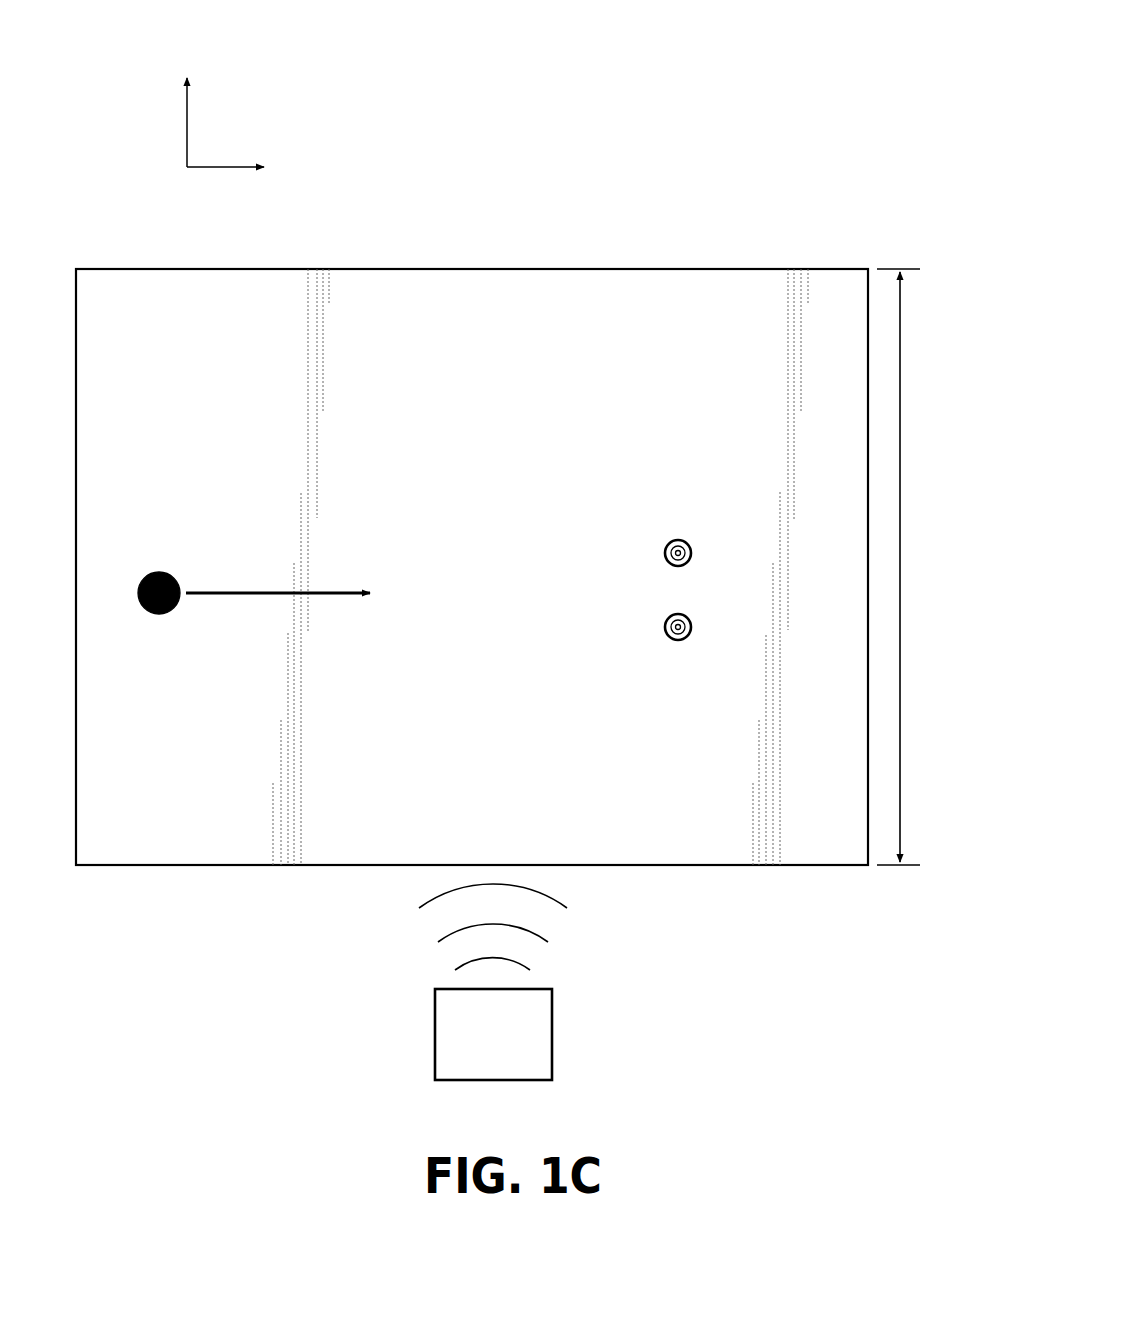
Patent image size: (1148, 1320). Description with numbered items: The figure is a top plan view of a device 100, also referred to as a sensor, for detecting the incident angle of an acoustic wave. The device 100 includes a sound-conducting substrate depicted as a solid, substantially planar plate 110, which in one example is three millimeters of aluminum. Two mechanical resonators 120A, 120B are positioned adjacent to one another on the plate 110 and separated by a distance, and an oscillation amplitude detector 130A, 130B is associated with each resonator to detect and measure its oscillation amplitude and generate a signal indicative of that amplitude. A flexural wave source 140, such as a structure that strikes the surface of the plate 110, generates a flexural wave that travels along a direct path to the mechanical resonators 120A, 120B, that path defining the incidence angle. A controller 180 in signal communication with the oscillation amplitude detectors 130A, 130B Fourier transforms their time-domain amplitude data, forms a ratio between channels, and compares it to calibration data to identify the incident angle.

The device 100 is at (829, 122).
The plate 110 is at (578, 266).
The mechanical resonator 120A is at (677, 538).
The oscillation amplitude detector 130A is at (680, 539).
The mechanical resonator 120B is at (674, 641).
The oscillation amplitude detector 130B is at (680, 641).
The flexural wave source 140 is at (167, 566).
The controller 180 is at (493, 982).